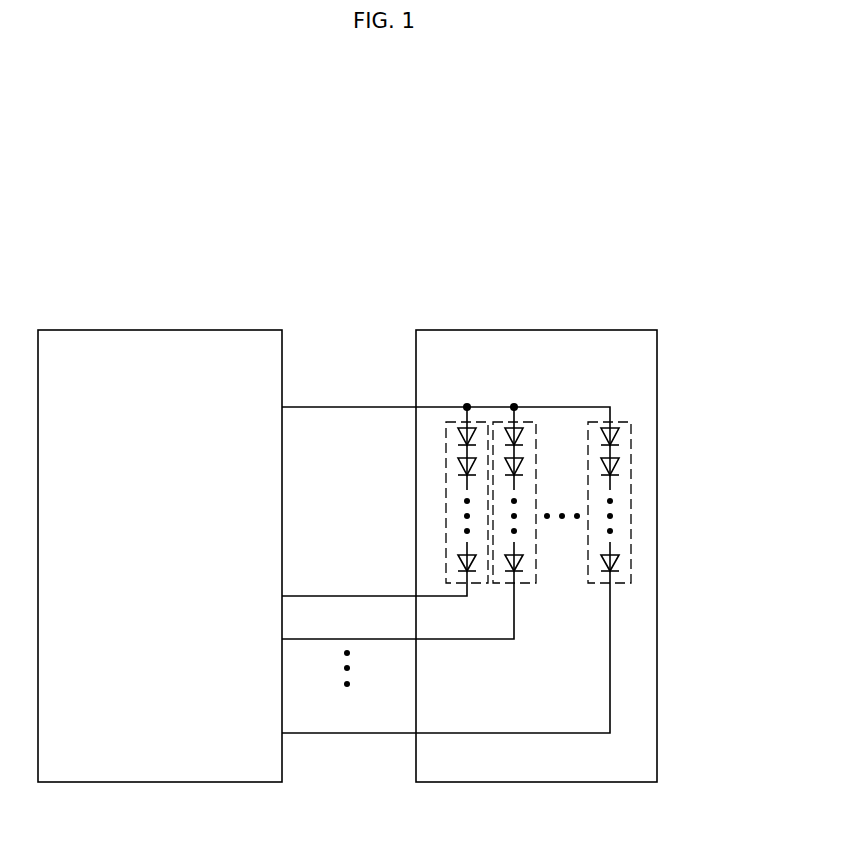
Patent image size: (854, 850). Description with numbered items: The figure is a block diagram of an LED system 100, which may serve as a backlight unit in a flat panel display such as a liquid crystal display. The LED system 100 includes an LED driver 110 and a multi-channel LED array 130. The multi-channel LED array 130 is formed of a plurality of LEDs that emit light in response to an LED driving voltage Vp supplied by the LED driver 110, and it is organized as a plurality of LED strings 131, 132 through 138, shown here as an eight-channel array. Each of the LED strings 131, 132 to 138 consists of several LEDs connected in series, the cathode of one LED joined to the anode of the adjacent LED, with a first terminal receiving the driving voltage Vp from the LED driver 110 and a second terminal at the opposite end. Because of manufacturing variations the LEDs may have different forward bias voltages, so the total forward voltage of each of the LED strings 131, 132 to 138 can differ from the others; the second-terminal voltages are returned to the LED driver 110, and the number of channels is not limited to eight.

The LED system 100 is at (657, 179).
The LED driver 110 is at (158, 330).
The multi-channel LED array 130 is at (535, 330).
The LED string 131 is at (446, 463).
The LED string 132 is at (536, 585).
The LED string 138 is at (631, 461).